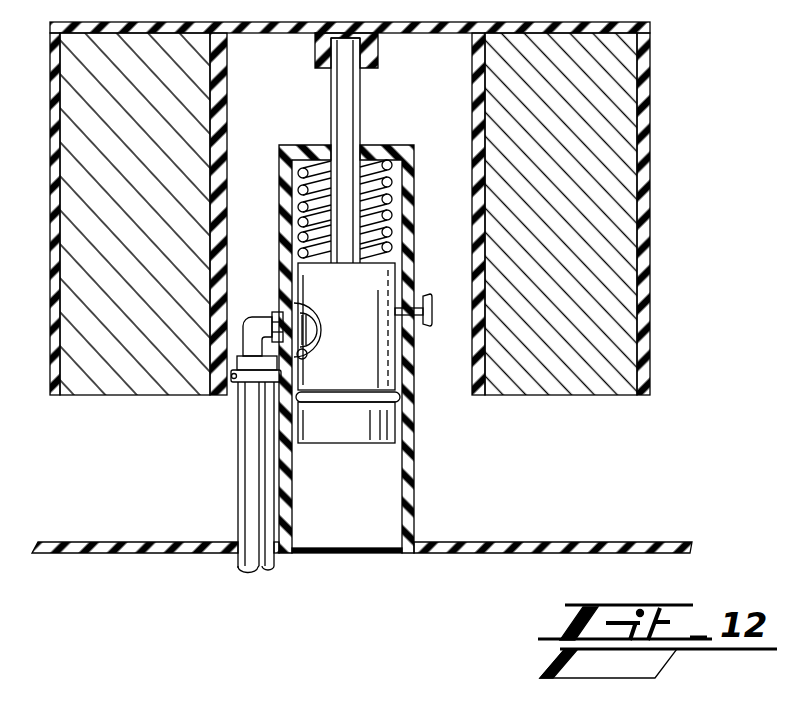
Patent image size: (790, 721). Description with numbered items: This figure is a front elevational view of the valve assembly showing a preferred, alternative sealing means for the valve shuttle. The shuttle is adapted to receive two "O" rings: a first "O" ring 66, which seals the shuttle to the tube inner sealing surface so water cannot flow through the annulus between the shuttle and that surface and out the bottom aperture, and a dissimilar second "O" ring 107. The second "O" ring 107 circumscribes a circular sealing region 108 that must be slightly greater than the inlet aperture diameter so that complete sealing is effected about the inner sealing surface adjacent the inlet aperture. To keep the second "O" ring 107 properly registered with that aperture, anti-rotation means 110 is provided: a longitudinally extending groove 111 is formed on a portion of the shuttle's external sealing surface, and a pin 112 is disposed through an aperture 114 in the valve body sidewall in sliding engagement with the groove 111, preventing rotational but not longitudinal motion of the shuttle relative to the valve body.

The "O" ring 66 is at (417, 420).
The second "O" ring 107 is at (285, 311).
The circular sealing region 108 is at (318, 350).
The anti-rotation means 110 is at (426, 283).
The longitudinally extending groove 111 is at (424, 283).
The pin 112 is at (432, 312).
The aperture 114 is at (417, 332).